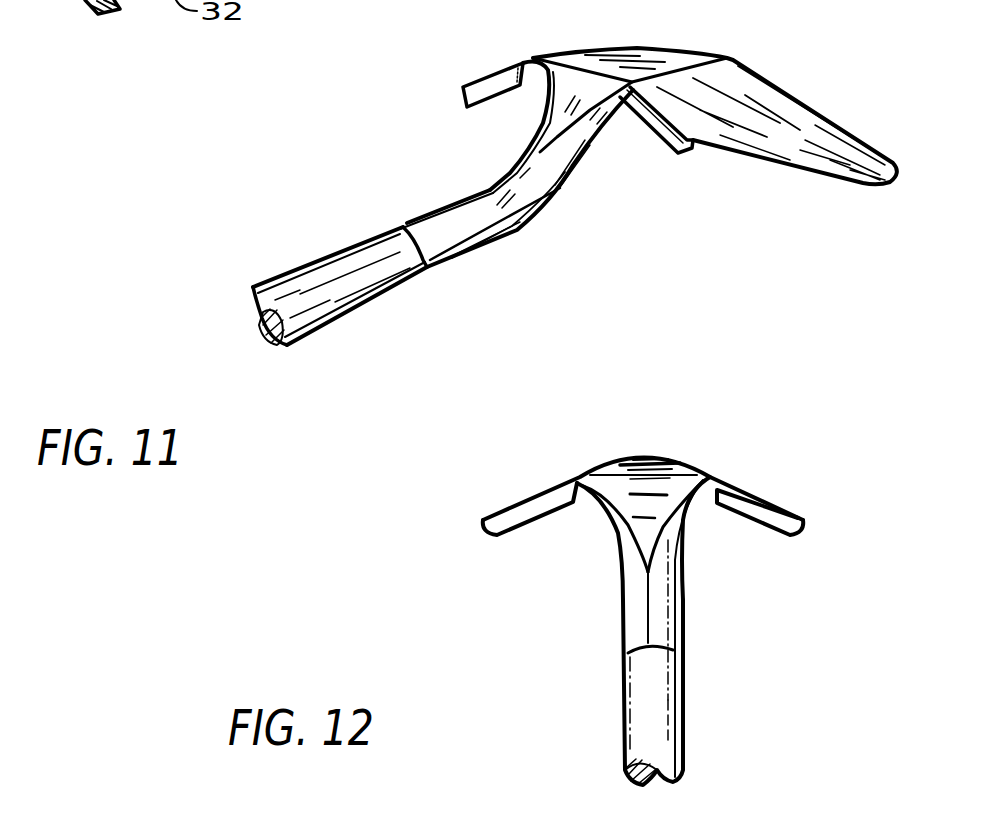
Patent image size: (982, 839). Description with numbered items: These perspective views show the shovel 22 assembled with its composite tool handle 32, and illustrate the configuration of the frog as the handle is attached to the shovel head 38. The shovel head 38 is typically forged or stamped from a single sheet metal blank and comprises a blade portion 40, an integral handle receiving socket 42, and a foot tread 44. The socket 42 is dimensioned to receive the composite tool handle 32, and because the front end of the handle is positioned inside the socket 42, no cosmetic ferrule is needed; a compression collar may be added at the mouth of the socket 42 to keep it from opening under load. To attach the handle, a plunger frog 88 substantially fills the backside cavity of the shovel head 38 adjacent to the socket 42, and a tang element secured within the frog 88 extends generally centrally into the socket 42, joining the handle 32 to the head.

In FIG. 11, the shovel 22 is at (355, 200).
In FIG. 12, the shovel 22 is at (520, 632).
In FIG. 11, the composite tool handle 32 is at (327, 300).
In FIG. 12, the composite tool handle 32 is at (685, 728).
In FIG. 11, the shovel head 38 is at (513, 230).
In FIG. 12, the shovel head 38 is at (735, 545).
In FIG. 11, the blade portion 40 is at (823, 180).
In FIG. 12, the blade portion 40 is at (568, 530).
In FIG. 11, the handle receiving socket 42 is at (457, 257).
In FIG. 12, the handle receiving socket 42 is at (680, 643).
In FIG. 11, the foot tread 44 is at (663, 140).
In FIG. 12, the foot tread 44 is at (513, 533).
In FIG. 11, the plunger frog 88 is at (623, 62).
In FIG. 12, the plunger frog 88 is at (652, 462).